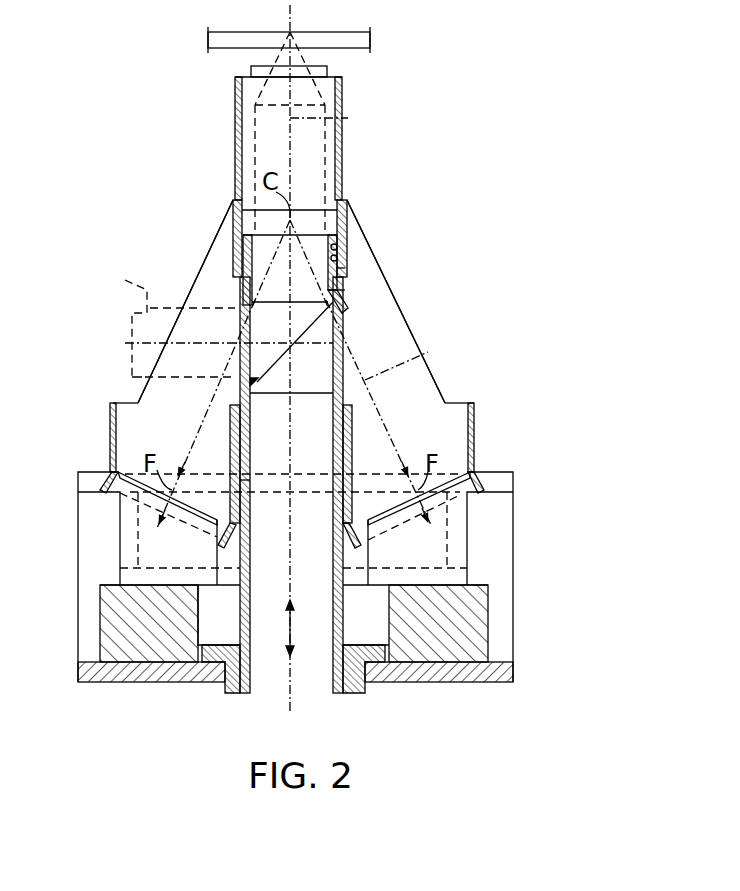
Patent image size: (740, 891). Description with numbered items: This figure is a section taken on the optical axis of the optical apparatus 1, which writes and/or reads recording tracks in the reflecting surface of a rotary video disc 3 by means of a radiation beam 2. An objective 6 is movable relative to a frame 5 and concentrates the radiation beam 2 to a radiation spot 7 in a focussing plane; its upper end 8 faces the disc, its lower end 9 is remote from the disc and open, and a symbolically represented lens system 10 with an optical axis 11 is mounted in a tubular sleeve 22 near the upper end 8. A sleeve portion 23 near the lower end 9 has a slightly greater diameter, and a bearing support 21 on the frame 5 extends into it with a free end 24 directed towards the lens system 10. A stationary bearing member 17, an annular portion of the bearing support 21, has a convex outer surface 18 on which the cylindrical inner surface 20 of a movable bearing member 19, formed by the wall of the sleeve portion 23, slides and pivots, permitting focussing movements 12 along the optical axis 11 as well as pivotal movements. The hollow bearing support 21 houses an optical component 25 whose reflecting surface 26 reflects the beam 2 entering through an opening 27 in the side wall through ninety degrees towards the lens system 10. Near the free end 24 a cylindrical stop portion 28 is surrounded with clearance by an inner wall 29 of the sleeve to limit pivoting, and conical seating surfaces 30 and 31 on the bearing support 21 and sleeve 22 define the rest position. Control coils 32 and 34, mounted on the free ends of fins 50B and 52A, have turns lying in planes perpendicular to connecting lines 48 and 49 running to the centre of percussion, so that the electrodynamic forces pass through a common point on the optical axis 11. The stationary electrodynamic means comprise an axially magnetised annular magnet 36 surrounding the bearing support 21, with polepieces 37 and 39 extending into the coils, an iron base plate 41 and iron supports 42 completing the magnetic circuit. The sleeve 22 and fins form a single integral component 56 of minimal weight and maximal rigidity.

The optical apparatus 1 is at (185, 247).
The radiation beam 2 is at (300, 55).
The video disc 3 is at (351, 42).
The frame 5 is at (518, 545).
The objective 6 is at (354, 219).
The radiation spot 7 is at (292, 36).
The upper end 8 is at (343, 98).
The lower end 9 is at (247, 517).
The lens system 10 is at (333, 162).
The optical axis 11 is at (335, 122).
The focussing movements 12 is at (290, 630).
The stationary bearing member 17 is at (245, 488).
The convex outer surface 18 is at (233, 482).
The movable bearing member 19 is at (346, 455).
The cylindrical inner surface 20 is at (347, 438).
The bearing support 21 is at (343, 630).
The tubular sleeve 22 is at (235, 157).
The sleeve portion 23 is at (233, 438).
The free end 24 is at (313, 285).
The optical component 25 is at (345, 328).
The reflecting surface 26 is at (250, 330).
The opening 27 is at (245, 363).
The cylindrical stop portion 28 is at (346, 262).
The inner wall 29 is at (346, 243).
The conical seating surface 30 is at (340, 290).
The conical seating surface 31 is at (345, 272).
The control coil 32 is at (112, 470).
The control coil 34 is at (476, 470).
The annular magnet 36 is at (130, 642).
The polepiece 37 is at (120, 540).
The polepiece 39 is at (455, 552).
The iron base plate 41 is at (473, 672).
The iron support 42 is at (95, 515).
The connecting line 48 is at (215, 398).
The connecting line 49 is at (396, 412).
The fin 50B is at (132, 426).
The fin 52A is at (420, 388).
The integral component 56 is at (430, 370).